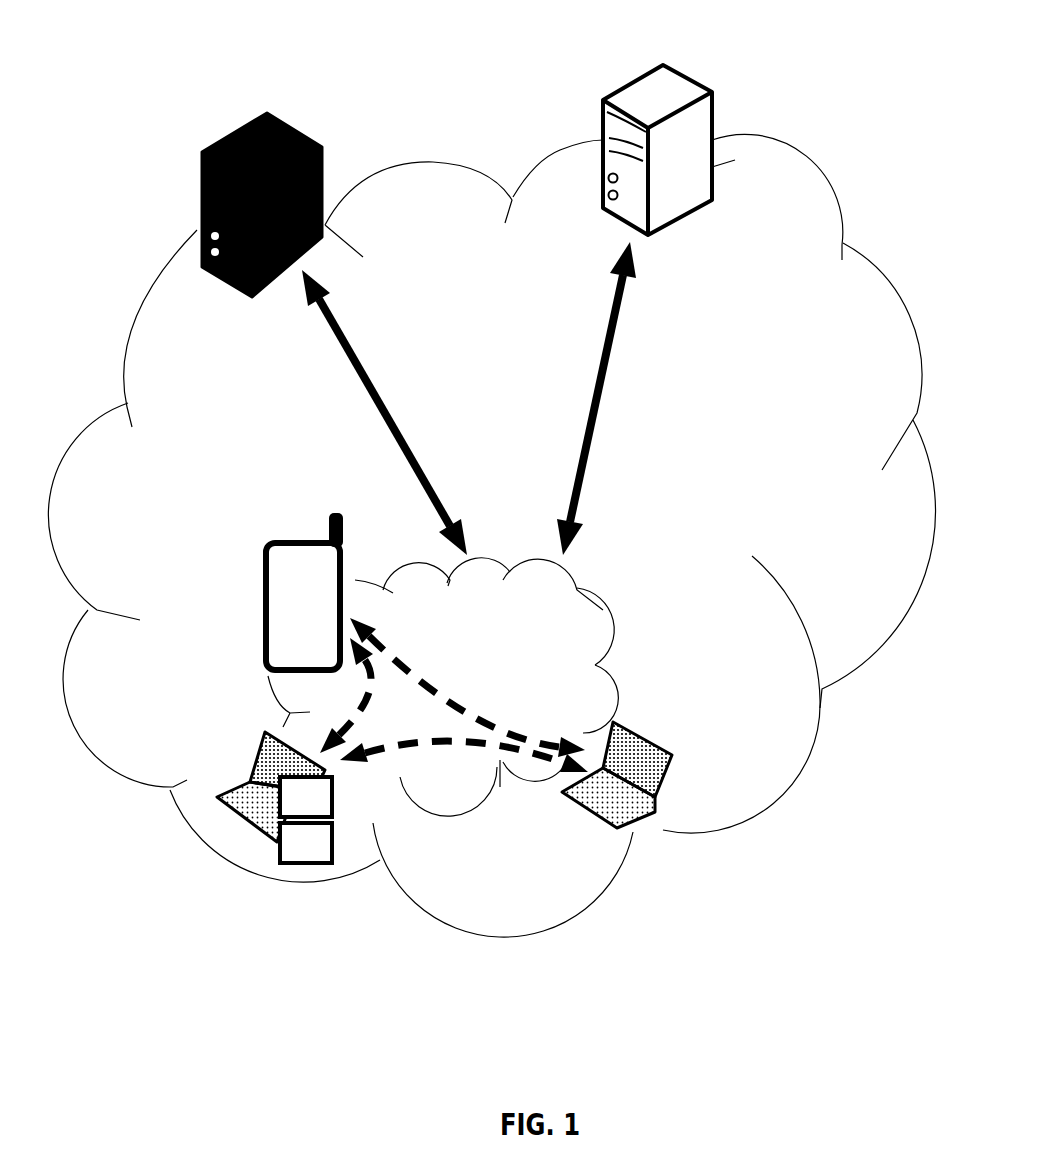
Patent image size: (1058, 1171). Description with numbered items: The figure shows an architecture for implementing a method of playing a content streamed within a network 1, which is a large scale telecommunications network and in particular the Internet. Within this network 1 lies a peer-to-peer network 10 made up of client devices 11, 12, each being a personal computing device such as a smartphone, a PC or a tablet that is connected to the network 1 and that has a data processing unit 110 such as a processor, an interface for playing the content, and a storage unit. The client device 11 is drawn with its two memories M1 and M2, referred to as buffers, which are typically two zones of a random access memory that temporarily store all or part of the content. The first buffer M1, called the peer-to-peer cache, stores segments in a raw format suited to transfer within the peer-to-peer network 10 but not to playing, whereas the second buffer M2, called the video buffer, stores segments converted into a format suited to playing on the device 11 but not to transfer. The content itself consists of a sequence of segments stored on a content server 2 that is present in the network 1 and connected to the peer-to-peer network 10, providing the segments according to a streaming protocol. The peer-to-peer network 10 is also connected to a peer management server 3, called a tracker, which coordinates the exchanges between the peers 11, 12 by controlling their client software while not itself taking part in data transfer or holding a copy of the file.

The network 1 is at (904, 668).
The server 2 is at (229, 111).
The peer management server 3 is at (719, 68).
The peer-to-peer network 10 is at (510, 550).
The client device 11 is at (228, 829).
The client device 12 is at (252, 562).
The data processing unit 110 is at (345, 801).
The first buffer M1 is at (355, 890).
The second buffer M2 is at (308, 875).